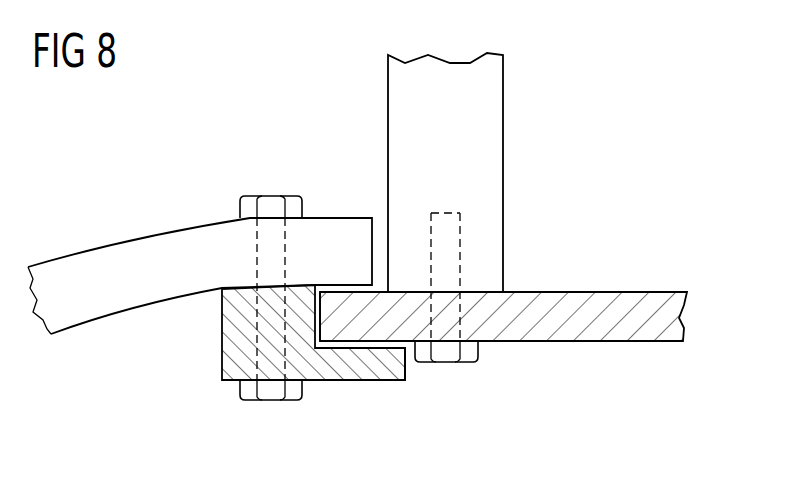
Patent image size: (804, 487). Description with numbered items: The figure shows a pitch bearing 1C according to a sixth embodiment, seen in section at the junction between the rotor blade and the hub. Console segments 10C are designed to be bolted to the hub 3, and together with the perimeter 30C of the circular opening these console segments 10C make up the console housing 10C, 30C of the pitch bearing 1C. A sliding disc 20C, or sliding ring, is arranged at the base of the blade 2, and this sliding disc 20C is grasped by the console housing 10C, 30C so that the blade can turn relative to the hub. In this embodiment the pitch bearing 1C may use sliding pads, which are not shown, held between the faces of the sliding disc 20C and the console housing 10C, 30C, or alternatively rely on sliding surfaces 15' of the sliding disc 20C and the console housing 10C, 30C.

The pitch bearing 1C is at (613, 128).
The blade 2 is at (400, 84).
The hub 3 is at (133, 257).
The console segment 10C is at (318, 375).
The sliding surface 15' is at (334, 283).
The sliding disc 20C is at (588, 332).
The perimeter of the circular opening 30C is at (370, 352).